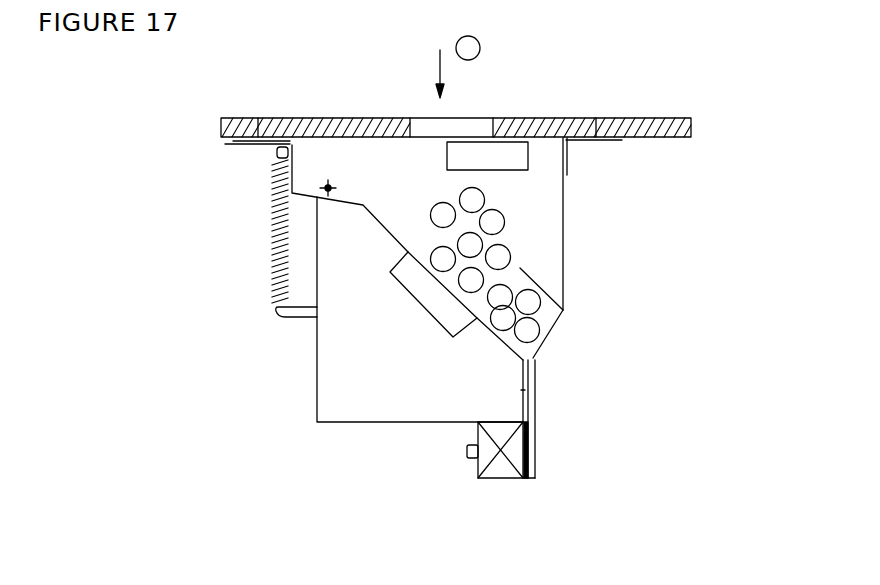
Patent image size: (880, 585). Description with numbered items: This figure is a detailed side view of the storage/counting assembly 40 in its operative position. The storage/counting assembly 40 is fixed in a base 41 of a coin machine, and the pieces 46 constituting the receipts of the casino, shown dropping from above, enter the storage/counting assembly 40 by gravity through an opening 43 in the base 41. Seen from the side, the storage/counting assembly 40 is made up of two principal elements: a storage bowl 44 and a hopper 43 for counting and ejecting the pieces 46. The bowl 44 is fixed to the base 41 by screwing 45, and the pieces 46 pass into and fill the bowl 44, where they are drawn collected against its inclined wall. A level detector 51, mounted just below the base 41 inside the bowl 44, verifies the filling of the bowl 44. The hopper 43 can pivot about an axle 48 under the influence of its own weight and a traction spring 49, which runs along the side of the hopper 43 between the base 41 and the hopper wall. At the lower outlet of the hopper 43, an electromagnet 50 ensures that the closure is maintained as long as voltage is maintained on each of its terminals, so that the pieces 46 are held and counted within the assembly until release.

The storage/counting assembly 40 is at (653, 140).
The base 41 is at (647, 117).
The hopper 43 is at (333, 380).
The storage bowl 44 is at (528, 253).
The screwing 45 is at (257, 147).
The pieces 46 is at (477, 42).
The axle 48 is at (328, 185).
The traction spring 49 is at (277, 283).
The electromagnet 50 is at (490, 467).
The level detector 51 is at (510, 162).